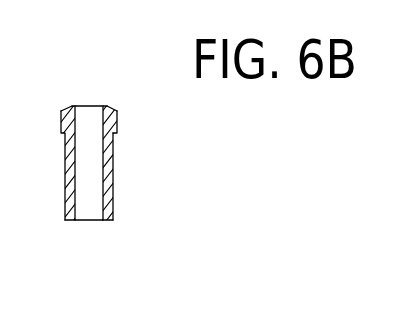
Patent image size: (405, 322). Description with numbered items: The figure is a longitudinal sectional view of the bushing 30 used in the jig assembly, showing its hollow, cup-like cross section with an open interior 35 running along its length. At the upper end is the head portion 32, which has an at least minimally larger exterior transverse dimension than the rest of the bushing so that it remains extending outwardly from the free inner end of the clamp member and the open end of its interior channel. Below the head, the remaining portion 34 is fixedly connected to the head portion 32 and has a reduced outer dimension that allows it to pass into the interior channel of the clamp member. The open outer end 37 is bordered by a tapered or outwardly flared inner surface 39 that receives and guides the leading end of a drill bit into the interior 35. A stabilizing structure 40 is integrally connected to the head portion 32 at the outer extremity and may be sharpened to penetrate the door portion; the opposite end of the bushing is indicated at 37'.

The bushing 30 is at (158, 107).
The head portion 32 is at (117, 122).
The remaining portion 34 is at (113, 182).
The interior 35 is at (89, 198).
The open outer end 37 is at (98, 66).
The bottom edge 37' is at (65, 254).
The tapered or outwardly flared inner surface 39 is at (82, 107).
The stabilizing structure 40 is at (108, 107).